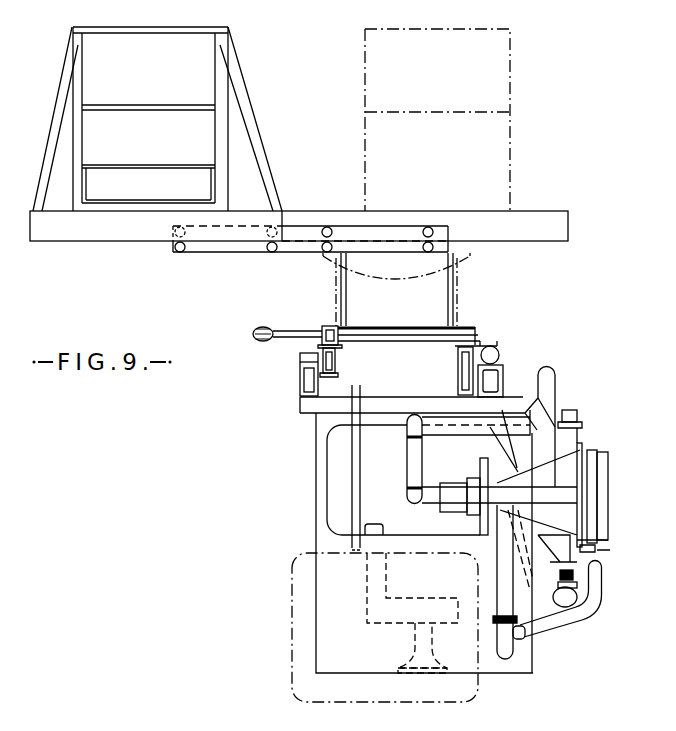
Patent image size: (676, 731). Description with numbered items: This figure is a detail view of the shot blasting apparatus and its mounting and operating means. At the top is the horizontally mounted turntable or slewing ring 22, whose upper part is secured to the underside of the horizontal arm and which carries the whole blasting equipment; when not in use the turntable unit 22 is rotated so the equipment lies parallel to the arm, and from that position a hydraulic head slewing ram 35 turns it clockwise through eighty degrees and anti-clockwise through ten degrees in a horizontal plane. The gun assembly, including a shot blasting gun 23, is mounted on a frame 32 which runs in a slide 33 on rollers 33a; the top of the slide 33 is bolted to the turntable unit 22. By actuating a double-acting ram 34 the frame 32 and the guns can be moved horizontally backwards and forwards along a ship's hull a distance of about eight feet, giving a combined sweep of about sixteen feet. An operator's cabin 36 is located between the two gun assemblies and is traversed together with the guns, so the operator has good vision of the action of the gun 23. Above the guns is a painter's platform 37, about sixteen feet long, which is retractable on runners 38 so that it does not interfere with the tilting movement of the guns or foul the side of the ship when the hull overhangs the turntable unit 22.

The turntable or slewing ring 22 is at (437, 333).
The shot blasting gun 23 is at (600, 515).
The frame 32 is at (302, 385).
The slide 33 is at (330, 380).
The rollers 33a is at (334, 352).
The double-acting ram 34 is at (492, 350).
The head slewing ram 35 is at (258, 339).
The operator's cabin 36 is at (342, 512).
The painter's platform 37 is at (142, 228).
The runners 38 is at (233, 232).